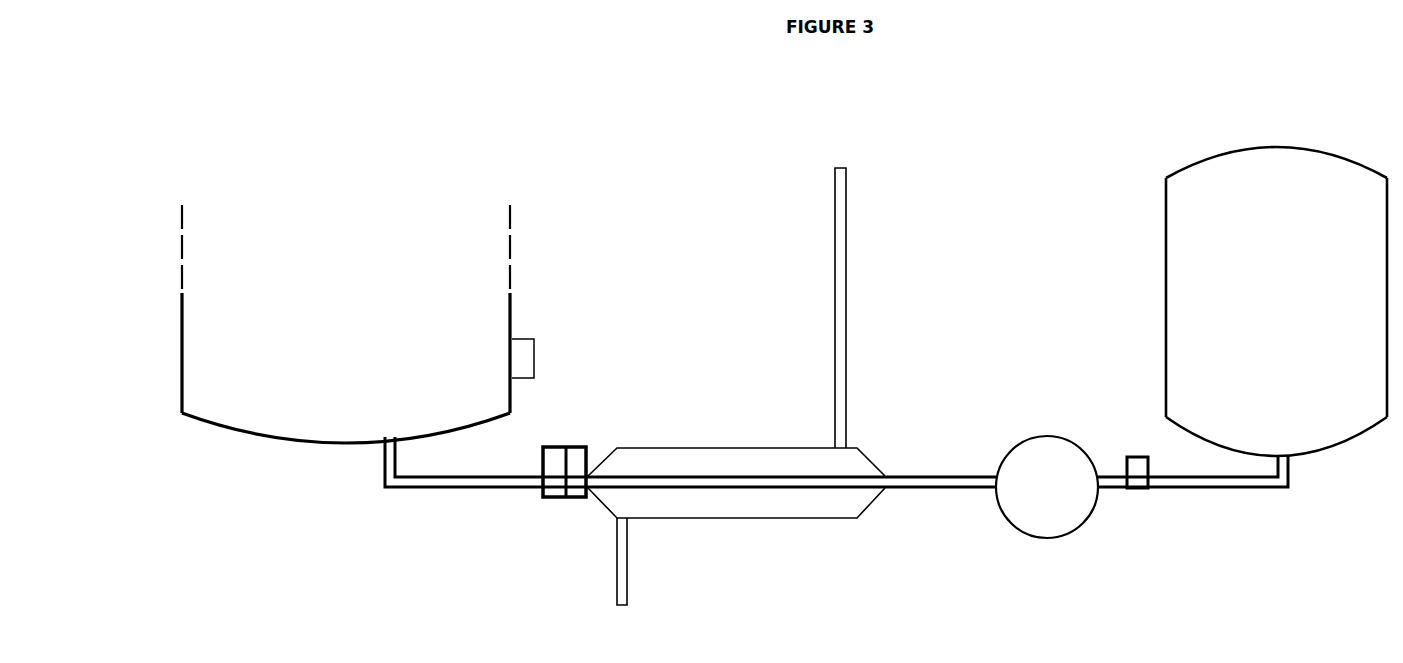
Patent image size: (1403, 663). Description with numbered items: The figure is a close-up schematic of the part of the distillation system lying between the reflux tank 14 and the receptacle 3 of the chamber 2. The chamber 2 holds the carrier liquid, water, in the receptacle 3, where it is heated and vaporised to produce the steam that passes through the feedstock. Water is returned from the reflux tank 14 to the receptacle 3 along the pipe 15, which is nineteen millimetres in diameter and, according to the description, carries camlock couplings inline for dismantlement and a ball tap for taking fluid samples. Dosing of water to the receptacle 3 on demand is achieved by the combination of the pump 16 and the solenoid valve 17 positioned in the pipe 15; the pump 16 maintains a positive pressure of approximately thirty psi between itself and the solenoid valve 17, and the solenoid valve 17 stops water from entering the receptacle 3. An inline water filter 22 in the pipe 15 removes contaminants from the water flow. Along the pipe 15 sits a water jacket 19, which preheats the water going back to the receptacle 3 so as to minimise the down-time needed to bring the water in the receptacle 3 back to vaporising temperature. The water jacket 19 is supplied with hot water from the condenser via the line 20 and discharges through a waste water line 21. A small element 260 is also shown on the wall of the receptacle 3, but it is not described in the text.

The chamber 2 is at (170, 396).
The receptacle 3 is at (326, 426).
The sensor 260 is at (551, 363).
The pipe 15 is at (433, 499).
The solenoid valve 17 is at (556, 509).
The water jacket 19 is at (788, 529).
The line 20 is at (815, 293).
The waste water line 21 is at (641, 583).
The pump 16 is at (1032, 549).
The inline water filter 22 is at (1135, 501).
The reflux tank 14 is at (1296, 451).